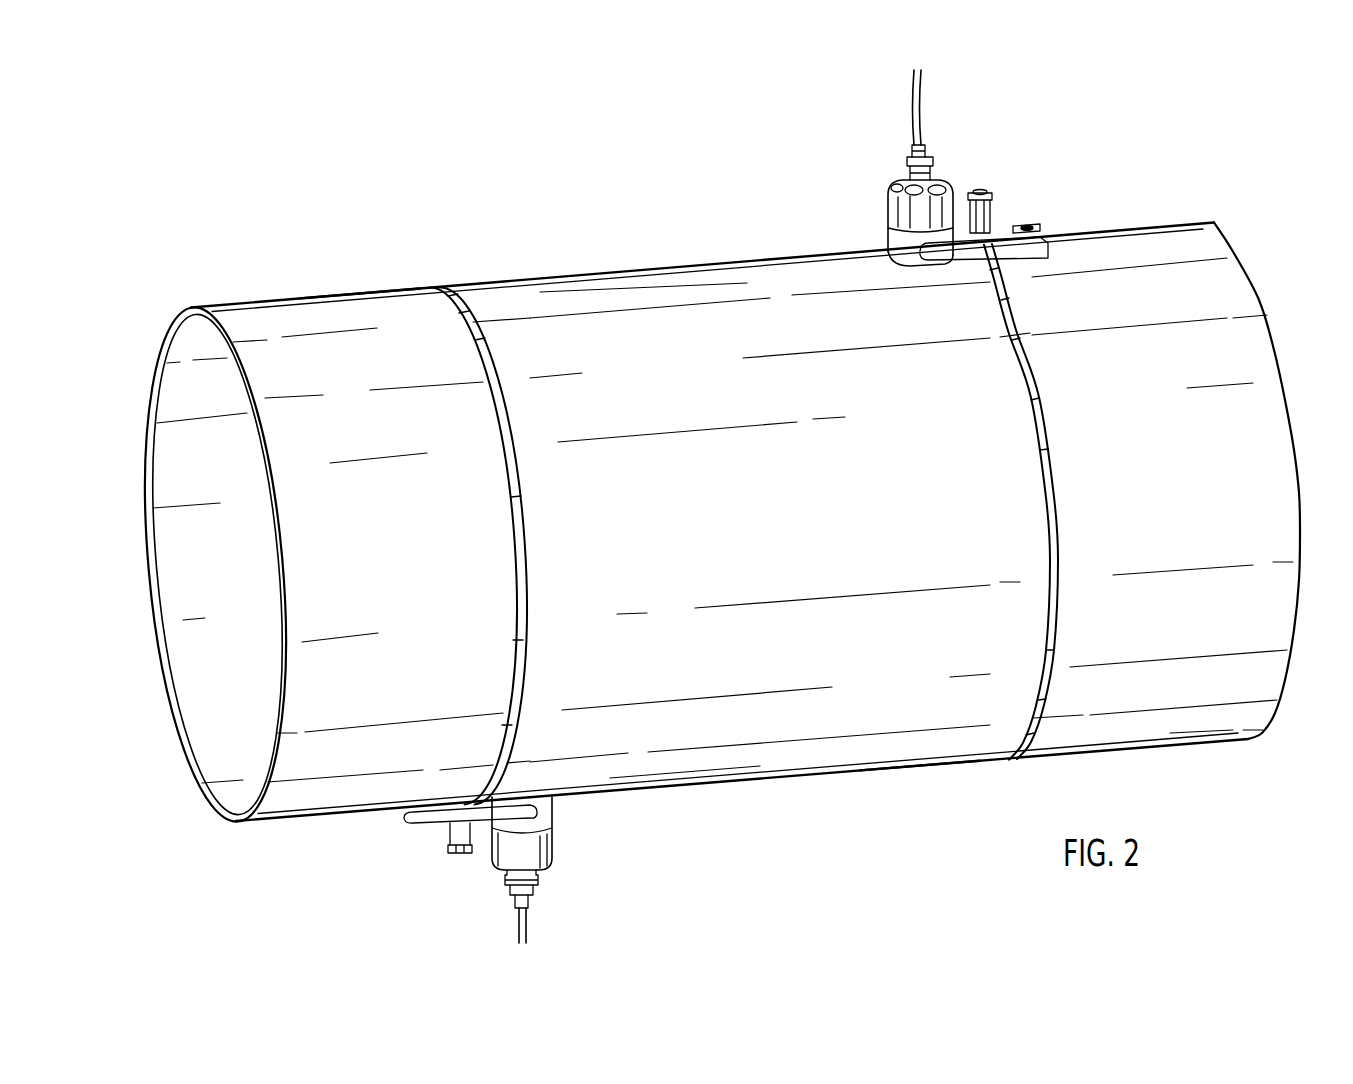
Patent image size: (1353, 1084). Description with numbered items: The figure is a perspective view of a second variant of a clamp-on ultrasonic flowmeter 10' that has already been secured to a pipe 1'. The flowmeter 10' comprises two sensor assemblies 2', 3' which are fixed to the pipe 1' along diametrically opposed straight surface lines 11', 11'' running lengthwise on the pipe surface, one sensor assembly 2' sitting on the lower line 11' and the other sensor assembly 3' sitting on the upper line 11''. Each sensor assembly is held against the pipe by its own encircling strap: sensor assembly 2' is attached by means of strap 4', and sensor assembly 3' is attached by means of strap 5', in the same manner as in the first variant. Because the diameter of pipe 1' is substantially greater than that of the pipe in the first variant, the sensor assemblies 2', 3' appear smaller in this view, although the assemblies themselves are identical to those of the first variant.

The pipe 1' is at (723, 525).
The sensor assembly 2' is at (576, 870).
The sensor assembly 3' is at (960, 168).
The strap 4' is at (507, 546).
The strap 5' is at (1048, 502).
The clamp-on flowmeter 10' is at (695, 533).
The straight surface line 11' is at (913, 794).
The straight surface line 11'' is at (357, 269).